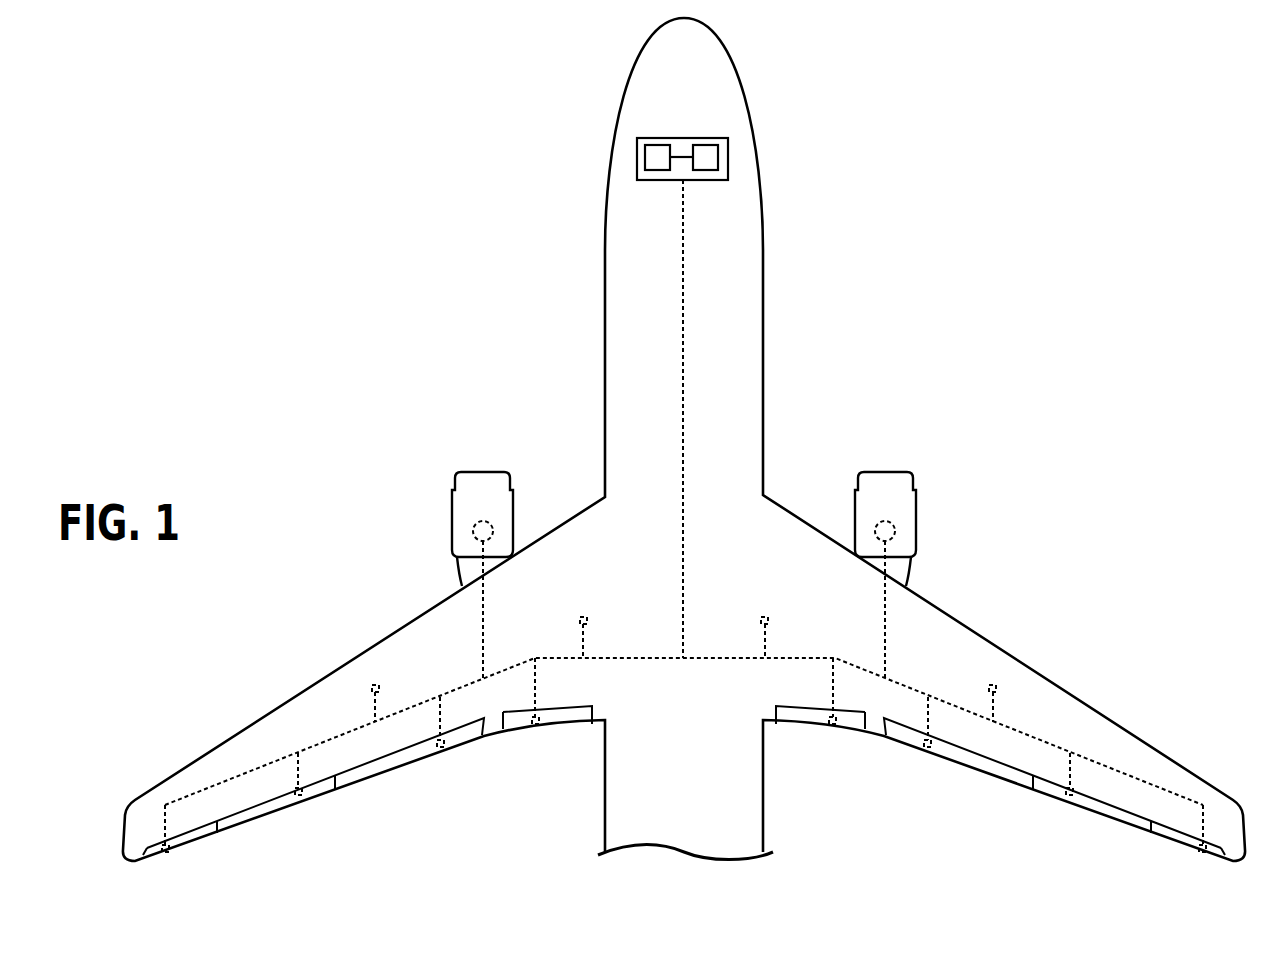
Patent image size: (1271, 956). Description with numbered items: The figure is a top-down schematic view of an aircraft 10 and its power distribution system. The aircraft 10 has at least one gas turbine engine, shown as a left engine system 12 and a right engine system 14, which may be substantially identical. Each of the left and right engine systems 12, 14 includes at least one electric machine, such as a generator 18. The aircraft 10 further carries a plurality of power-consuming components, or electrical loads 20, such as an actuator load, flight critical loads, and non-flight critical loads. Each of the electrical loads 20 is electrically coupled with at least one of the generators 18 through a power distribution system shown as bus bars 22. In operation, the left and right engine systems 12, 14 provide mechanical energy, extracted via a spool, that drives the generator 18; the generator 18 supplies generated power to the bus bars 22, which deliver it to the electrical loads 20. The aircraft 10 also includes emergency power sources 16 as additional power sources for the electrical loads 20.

The aircraft 10 is at (477, 51).
The left engine system 12 is at (483, 484).
The right engine system 14 is at (897, 485).
The emergency power sources 16 is at (646, 171).
The generator 18 is at (494, 527).
The electrical loads 20 is at (375, 684).
The bus bars 22 is at (683, 357).